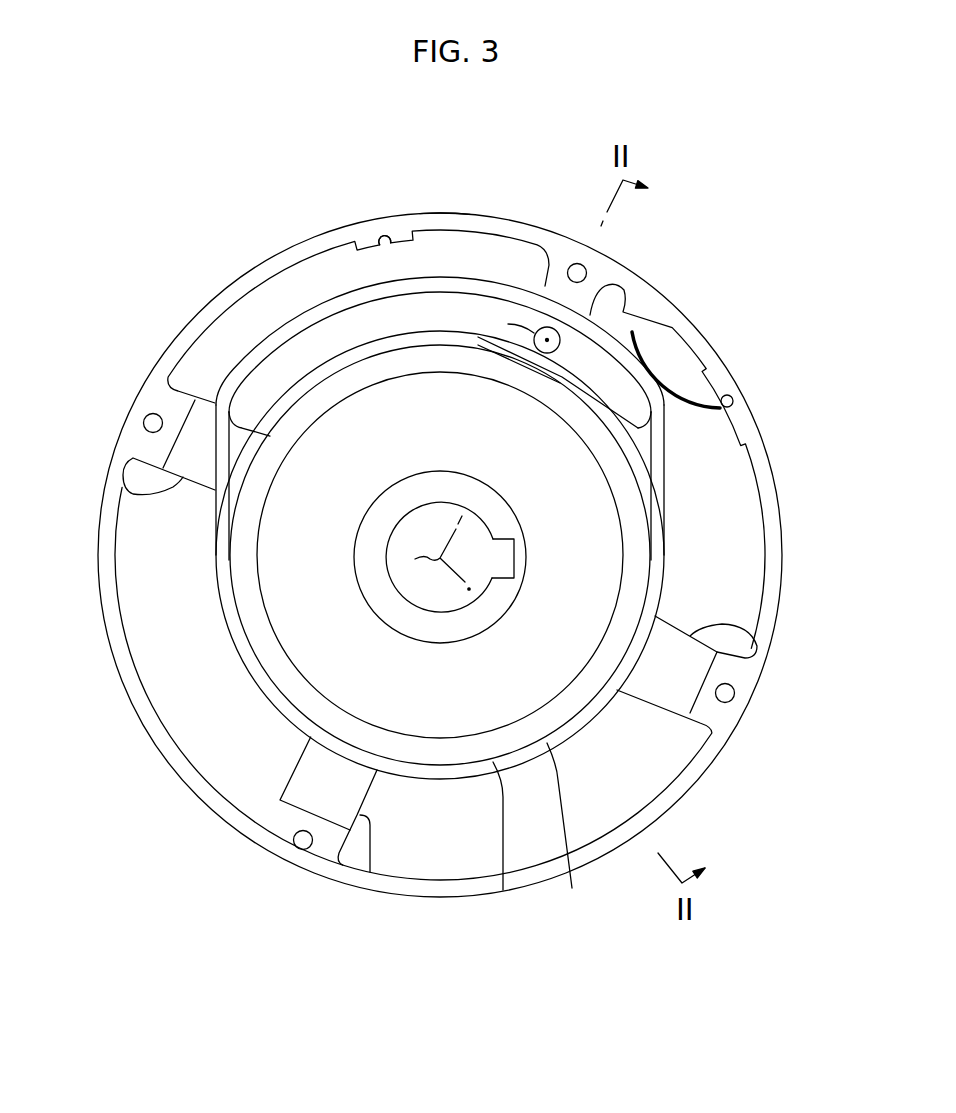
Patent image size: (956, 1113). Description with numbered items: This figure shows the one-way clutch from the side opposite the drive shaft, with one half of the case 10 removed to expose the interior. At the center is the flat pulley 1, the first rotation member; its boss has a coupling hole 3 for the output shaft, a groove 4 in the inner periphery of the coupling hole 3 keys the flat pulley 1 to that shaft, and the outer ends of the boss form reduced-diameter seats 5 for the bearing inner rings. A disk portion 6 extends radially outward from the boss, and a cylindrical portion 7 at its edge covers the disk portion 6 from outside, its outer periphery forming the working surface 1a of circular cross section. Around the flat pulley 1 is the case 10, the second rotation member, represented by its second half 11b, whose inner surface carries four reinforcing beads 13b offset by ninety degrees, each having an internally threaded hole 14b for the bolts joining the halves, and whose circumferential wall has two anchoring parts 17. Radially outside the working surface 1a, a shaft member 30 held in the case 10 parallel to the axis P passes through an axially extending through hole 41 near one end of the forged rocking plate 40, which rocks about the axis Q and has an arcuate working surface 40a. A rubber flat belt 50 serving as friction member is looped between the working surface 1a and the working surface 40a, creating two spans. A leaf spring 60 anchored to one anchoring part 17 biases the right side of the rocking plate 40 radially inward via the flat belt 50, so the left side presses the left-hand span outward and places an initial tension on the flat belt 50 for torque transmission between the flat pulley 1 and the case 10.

The flat pulley 1 is at (541, 745).
The working surface 1a is at (503, 892).
The coupling hole 3 is at (441, 613).
The groove 4 is at (514, 558).
The seats 5 is at (370, 607).
The disk portion 6 is at (293, 626).
The cylindrical portion 7 is at (298, 697).
The case 10 is at (499, 215).
The second half 11b is at (456, 212).
The reinforcing beads 13b is at (122, 480).
The internally threaded hole 14b is at (158, 418).
The anchoring parts 17 is at (380, 232).
The shaft member 30 is at (545, 353).
The rocking plate 40 is at (262, 350).
The working surface 40a is at (300, 327).
The through hole 41 is at (544, 352).
The flat belt 50 is at (668, 513).
The leaf spring 60 is at (678, 392).